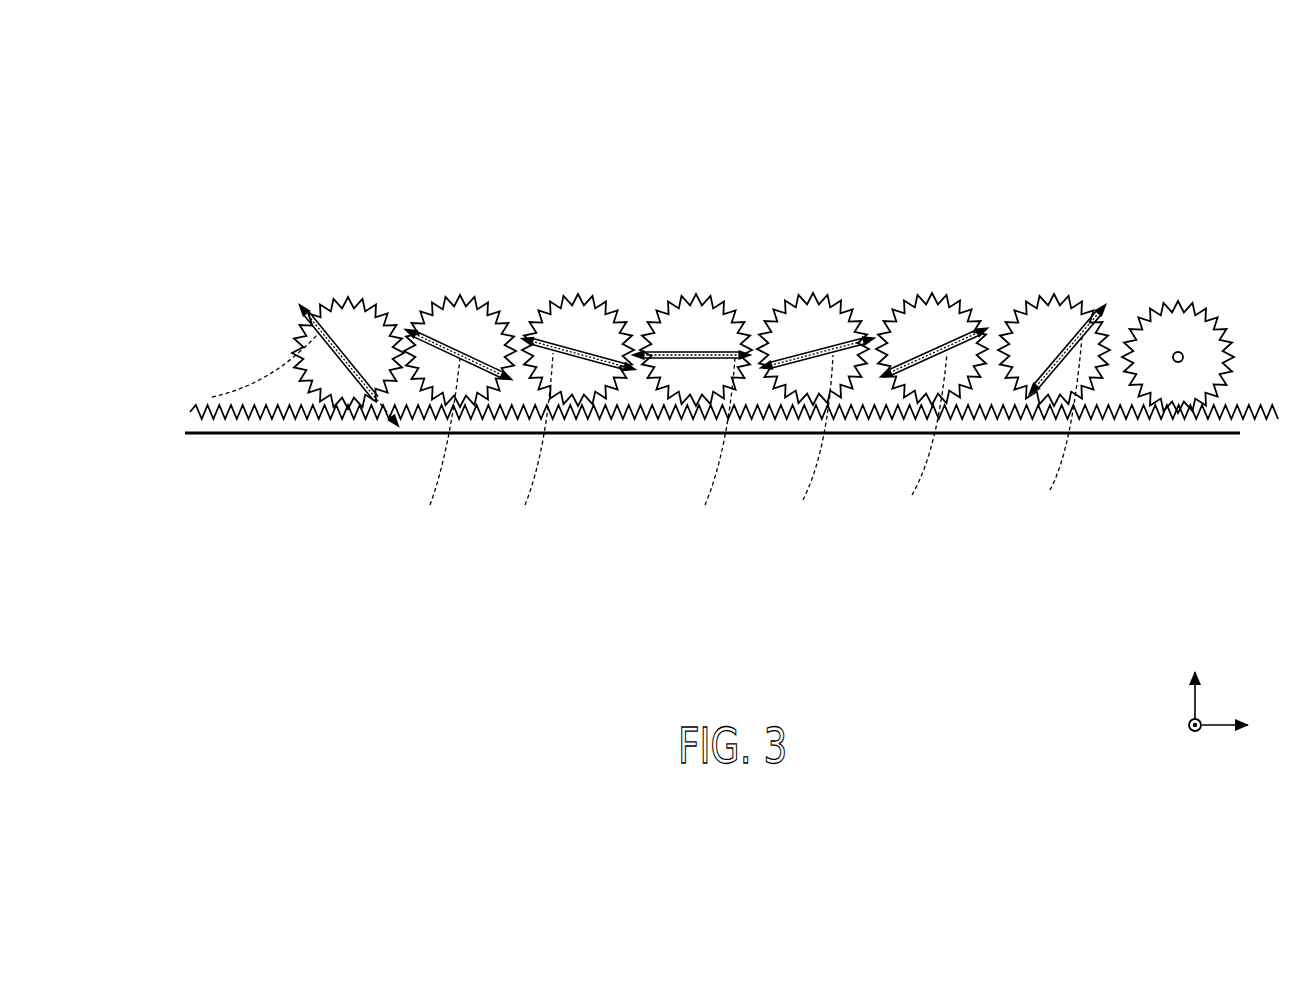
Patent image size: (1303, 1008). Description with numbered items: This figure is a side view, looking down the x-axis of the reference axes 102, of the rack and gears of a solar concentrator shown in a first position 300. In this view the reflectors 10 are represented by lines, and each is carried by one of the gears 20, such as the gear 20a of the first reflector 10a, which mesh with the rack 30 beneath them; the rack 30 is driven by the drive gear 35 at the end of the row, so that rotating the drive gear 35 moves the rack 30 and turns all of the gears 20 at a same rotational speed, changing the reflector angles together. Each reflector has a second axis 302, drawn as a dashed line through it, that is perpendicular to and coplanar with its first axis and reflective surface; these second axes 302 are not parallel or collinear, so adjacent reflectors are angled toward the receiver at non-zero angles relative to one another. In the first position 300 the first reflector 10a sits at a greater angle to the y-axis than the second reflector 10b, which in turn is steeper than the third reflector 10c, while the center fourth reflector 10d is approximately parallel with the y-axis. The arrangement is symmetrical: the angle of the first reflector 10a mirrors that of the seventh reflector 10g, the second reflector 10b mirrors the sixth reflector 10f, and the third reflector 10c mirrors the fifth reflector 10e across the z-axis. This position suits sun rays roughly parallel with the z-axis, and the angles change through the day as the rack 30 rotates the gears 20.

The first position 300 is at (331, 95).
The reflectors 10 is at (438, 198).
The first reflector 10a is at (318, 310).
The second reflector 10b is at (430, 337).
The third reflector 10c is at (603, 358).
The fourth reflector 10d is at (720, 350).
The fifth reflector 10e is at (781, 357).
The sixth reflector 10f is at (918, 358).
The seventh reflector 10g is at (1052, 360).
The gears 20 is at (1102, 200).
The gear of first reflector 20a is at (357, 303).
The drive gear 35 is at (1198, 308).
The rack 30 is at (617, 435).
The second axes 302 is at (627, 434).
The reference axes 102 is at (1248, 690).